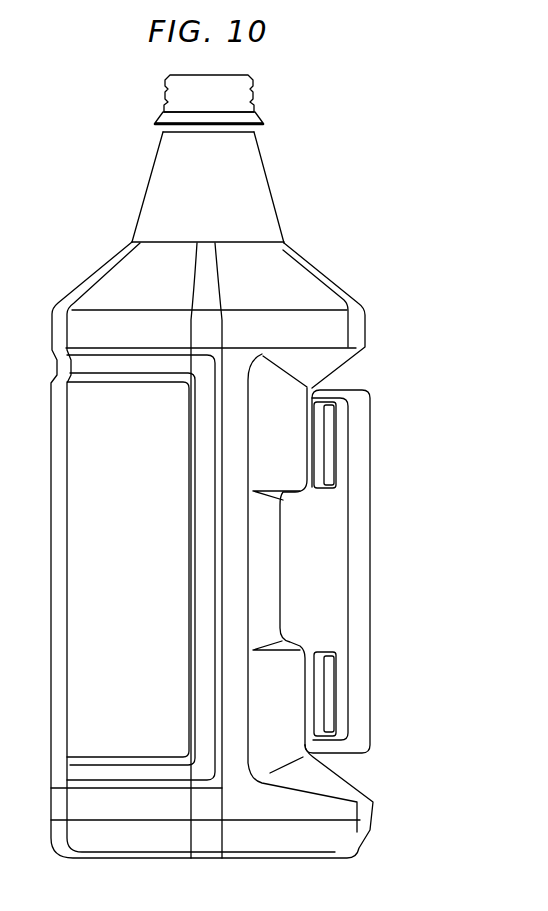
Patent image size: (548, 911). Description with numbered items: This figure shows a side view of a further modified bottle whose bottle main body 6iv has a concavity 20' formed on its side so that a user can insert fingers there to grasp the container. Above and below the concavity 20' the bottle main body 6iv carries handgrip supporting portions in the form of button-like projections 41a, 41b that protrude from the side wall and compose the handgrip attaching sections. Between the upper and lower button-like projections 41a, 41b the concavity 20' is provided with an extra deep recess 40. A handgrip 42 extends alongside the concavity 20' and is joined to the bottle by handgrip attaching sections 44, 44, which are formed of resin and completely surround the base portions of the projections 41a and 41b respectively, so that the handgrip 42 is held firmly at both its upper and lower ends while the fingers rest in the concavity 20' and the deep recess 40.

The bottle main body 6iv is at (160, 178).
The concavity 20' is at (335, 593).
The extra deep recess 40 is at (280, 597).
The handgrip 42 is at (360, 553).
The handgrip attaching section 44 is at (318, 423).
The button-like projection 41a is at (330, 440).
The button-like projection 41b is at (330, 683).